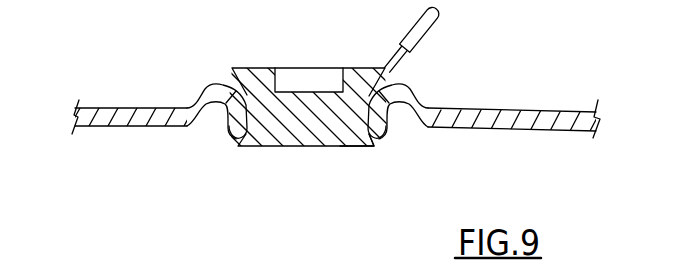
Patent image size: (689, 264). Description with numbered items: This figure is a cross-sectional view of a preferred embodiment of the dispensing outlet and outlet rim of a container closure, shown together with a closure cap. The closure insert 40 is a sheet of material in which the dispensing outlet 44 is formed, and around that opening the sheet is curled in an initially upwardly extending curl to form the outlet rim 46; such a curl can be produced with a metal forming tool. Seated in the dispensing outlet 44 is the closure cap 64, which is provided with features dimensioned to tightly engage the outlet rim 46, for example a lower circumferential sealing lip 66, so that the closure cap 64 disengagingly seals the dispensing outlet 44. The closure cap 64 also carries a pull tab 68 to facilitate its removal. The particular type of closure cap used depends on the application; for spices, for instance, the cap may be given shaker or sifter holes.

The closure insert 40 is at (547, 110).
The dispensing outlet 44 is at (285, 190).
The outlet rim 46 is at (212, 131).
The closure cap 64 is at (255, 68).
The lower circumferential sealing lip 66 is at (375, 147).
The pull tab 68 is at (441, 9).